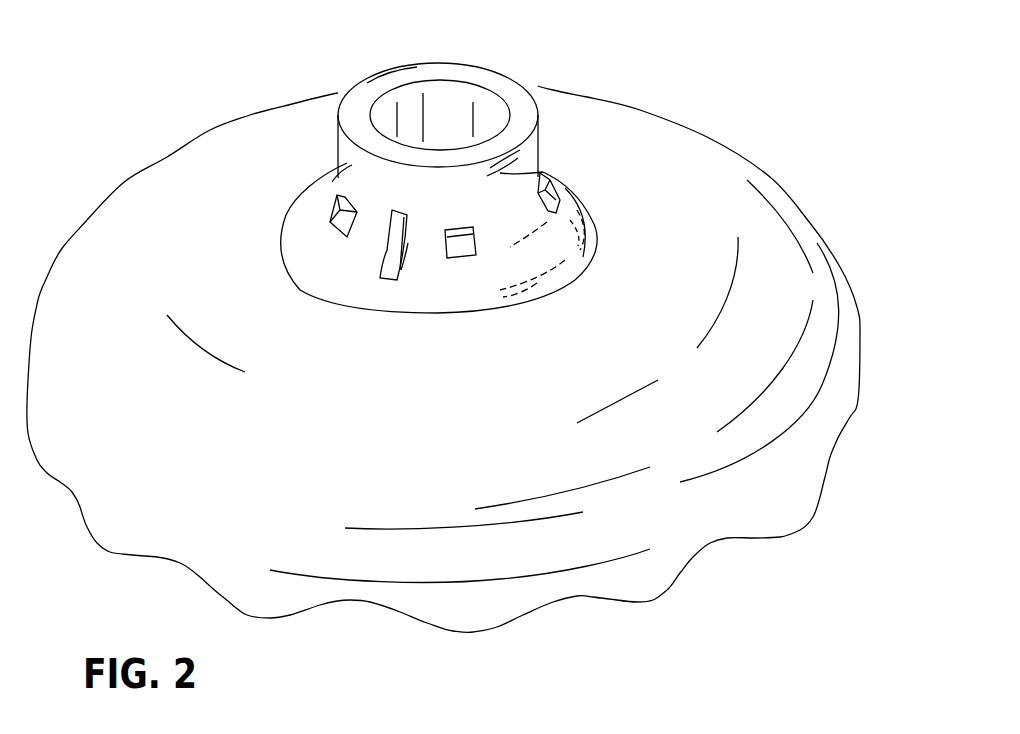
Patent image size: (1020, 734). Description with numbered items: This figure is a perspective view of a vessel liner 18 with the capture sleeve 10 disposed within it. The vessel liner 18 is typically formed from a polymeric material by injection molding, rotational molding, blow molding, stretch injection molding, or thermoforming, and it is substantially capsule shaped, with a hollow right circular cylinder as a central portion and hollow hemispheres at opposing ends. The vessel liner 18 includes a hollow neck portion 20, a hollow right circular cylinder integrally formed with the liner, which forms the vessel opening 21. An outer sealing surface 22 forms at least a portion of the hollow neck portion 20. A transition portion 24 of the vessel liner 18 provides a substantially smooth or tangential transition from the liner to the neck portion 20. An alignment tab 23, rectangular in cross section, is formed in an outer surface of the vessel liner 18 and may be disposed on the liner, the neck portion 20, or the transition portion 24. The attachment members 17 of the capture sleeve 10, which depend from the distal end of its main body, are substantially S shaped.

The capture sleeve 10 is at (542, 143).
The attachment members 17 is at (333, 213).
The vessel liner 18 is at (708, 158).
The hollow neck portion 20 is at (340, 170).
The vessel opening 21 is at (455, 97).
The outer sealing surface 22 is at (543, 167).
The alignment tab 23 is at (392, 260).
The transition portion 24 is at (340, 275).